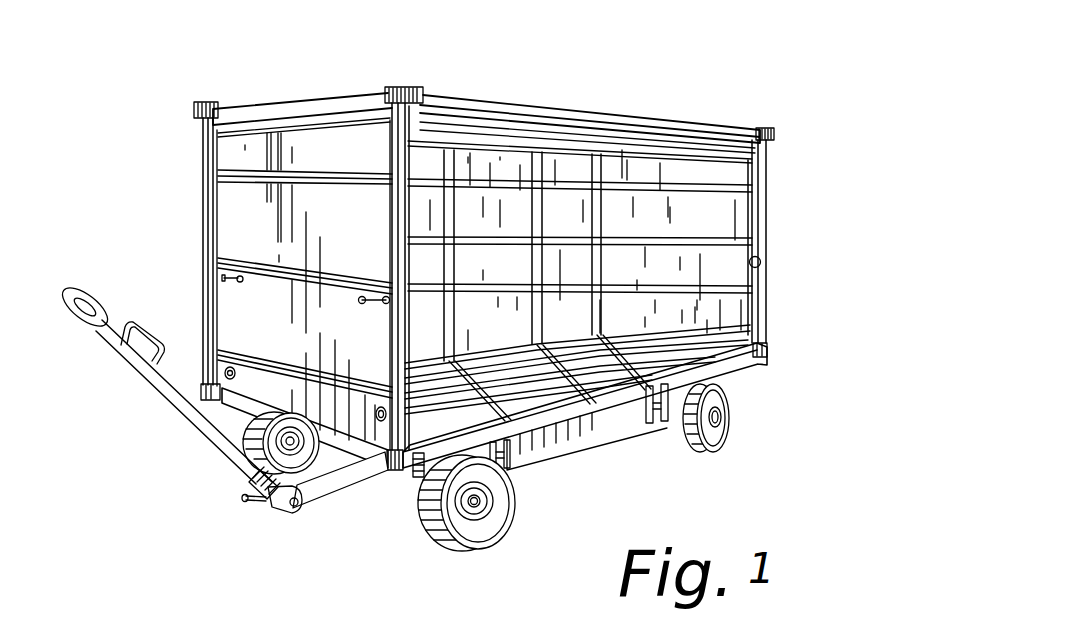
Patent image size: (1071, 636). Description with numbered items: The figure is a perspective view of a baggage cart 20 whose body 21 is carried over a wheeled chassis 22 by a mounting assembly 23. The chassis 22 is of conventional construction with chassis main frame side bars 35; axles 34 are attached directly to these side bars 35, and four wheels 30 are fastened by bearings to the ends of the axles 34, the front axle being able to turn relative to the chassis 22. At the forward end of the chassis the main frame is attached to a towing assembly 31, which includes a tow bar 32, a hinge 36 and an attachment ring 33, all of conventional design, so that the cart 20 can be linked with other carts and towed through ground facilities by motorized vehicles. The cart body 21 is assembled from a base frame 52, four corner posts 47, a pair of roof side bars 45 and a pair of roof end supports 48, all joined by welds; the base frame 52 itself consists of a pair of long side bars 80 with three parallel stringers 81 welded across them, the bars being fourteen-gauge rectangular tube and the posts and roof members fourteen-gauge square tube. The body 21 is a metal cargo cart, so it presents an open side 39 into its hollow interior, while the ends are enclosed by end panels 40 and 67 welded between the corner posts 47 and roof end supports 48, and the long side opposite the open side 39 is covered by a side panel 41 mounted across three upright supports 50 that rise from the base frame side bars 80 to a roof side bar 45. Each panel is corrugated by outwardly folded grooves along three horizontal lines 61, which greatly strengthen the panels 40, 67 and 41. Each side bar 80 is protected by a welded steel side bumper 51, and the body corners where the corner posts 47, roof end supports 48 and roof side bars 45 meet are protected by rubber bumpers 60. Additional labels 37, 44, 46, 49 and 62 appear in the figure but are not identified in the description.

The baggage cart 20 is at (454, 306).
The body 21 is at (776, 214).
The chassis 22 is at (608, 448).
The mounting assembly 23 is at (653, 427).
The wheels 30 is at (240, 414).
The towing assembly 31 is at (333, 480).
The tow bar 32 is at (210, 445).
The attachment ring 33 is at (84, 322).
The axles 34 is at (421, 480).
The chassis main frame side bars 35 is at (520, 468).
The hinge 36 is at (250, 502).
The hitch pivot 37 is at (361, 489).
The open side 39 is at (728, 253).
The end panel 40 is at (362, 234).
The side panel 41 is at (580, 275).
The upper rail 44 is at (606, 112).
The roof side bars 45 is at (686, 121).
The hinge 46 is at (760, 274).
The corner posts 47 is at (203, 224).
The roof end supports 48 is at (302, 108).
The cross rail 49 is at (712, 157).
The upright supports 50 is at (580, 231).
The side bumper 51 is at (764, 358).
The base frame 52 is at (750, 328).
The rubber bumpers 60 is at (212, 72).
The horizontal lines 61 is at (257, 357).
The latch 62 is at (372, 305).
The end panel 67 is at (730, 233).
The side bars 80 is at (513, 408).
The stringers 81 is at (600, 400).